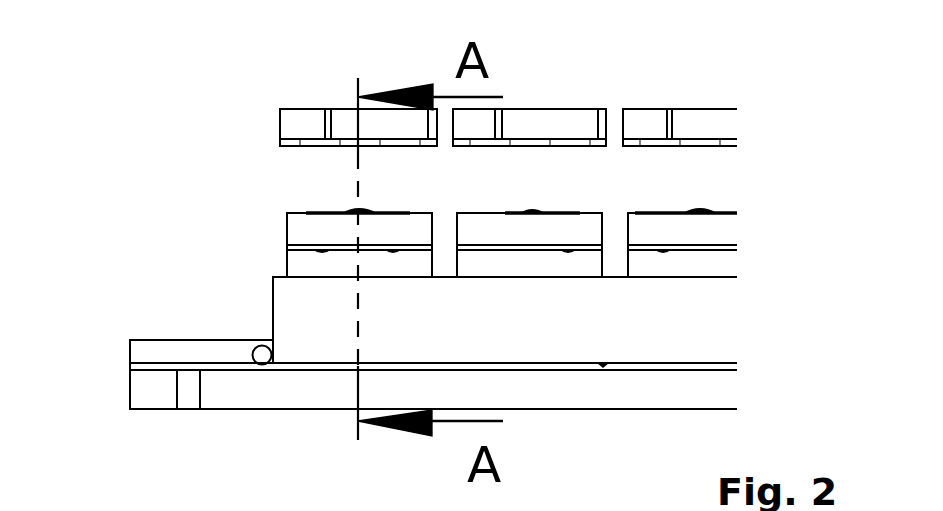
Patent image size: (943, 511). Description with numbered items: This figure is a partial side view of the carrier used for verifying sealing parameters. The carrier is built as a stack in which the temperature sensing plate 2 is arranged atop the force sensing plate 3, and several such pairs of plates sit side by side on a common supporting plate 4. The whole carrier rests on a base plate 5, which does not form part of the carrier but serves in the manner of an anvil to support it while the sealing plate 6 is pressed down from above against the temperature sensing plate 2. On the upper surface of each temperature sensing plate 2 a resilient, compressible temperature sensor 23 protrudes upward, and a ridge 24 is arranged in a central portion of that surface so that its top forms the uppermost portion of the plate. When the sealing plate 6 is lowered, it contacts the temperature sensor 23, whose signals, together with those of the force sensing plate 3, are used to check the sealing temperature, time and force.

The temperature sensing plate 2 is at (276, 230).
The force sensing plate 3 is at (275, 260).
The supporting plate 4 is at (257, 312).
The base plate 5 is at (114, 374).
The sealing plate 6 is at (693, 108).
The temperature sensor 23 is at (700, 206).
The ridge 24 is at (654, 206).